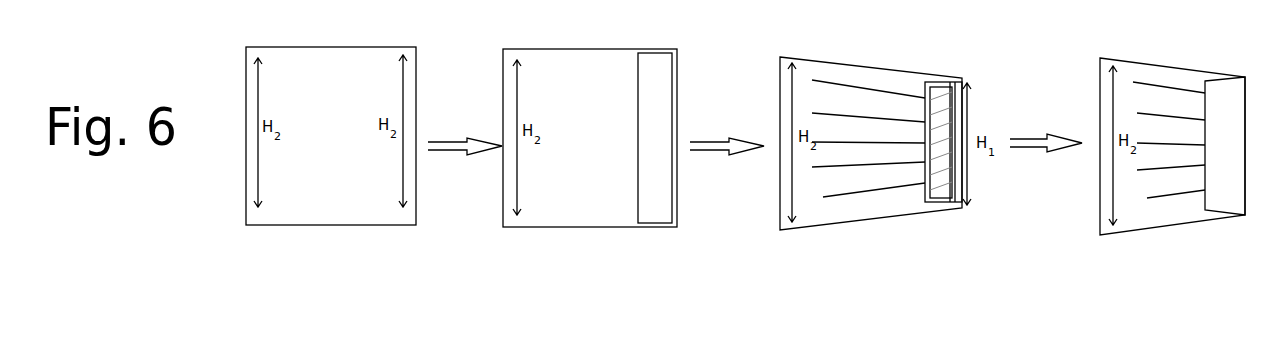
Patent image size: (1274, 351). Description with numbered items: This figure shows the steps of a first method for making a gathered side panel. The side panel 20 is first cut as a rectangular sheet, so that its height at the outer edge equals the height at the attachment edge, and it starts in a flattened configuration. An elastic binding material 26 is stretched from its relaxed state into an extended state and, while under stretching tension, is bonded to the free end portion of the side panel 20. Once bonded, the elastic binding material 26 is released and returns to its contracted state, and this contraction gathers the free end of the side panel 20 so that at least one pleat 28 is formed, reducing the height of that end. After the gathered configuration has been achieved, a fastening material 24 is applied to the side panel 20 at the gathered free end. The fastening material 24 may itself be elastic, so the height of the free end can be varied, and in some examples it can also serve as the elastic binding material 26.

The side panel 20 is at (343, 200).
The fastening material 24 is at (947, 82).
The elastic binding material 26 is at (672, 72).
The pleat 28 is at (887, 92).